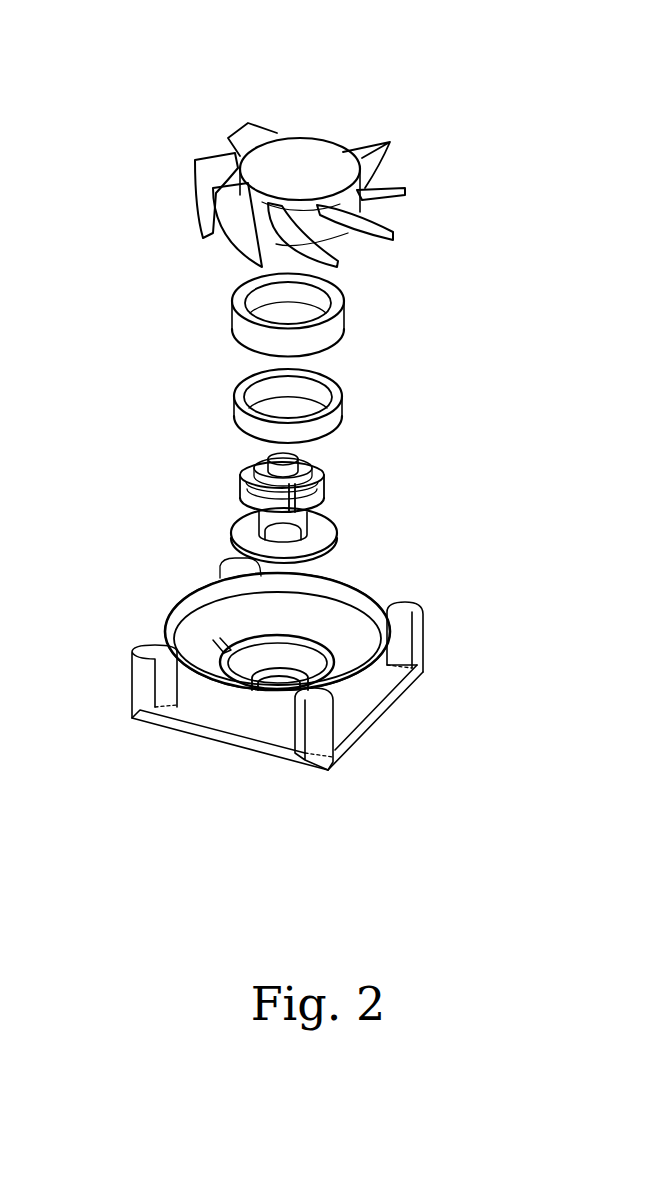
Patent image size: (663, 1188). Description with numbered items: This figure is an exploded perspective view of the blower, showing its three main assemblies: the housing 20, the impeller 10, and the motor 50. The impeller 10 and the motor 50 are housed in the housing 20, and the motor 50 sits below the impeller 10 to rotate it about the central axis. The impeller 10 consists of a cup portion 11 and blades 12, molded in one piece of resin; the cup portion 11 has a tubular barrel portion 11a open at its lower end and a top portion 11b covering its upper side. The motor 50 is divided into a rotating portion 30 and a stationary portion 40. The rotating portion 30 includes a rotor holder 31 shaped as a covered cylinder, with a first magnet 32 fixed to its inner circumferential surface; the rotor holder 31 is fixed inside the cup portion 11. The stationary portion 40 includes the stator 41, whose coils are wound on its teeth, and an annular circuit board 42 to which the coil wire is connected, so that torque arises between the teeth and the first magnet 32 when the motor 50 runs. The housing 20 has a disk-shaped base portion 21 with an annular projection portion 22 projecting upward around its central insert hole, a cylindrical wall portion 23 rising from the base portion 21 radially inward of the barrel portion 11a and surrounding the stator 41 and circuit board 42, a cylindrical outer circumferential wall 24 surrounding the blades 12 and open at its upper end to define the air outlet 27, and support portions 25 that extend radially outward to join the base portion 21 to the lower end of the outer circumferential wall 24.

The impeller 10 is at (218, 62).
The cup portion 11 is at (292, 160).
The barrel portion 11a is at (352, 158).
The top portion 11b is at (333, 157).
The blades 12 is at (242, 137).
The housing 20 is at (373, 602).
The base portion 21 is at (223, 680).
The projection portion 22 is at (300, 690).
The wall portion 23 is at (320, 648).
The outer circumferential wall 24 is at (373, 668).
The support portions 25 is at (216, 638).
The air outlet 27 is at (170, 618).
The rotating portion 30 is at (335, 320).
The rotor holder 31 is at (242, 323).
The first magnet 32 is at (242, 418).
The stationary portion 40 is at (325, 473).
The stator 41 is at (245, 480).
The circuit board 42 is at (323, 527).
The motor 50 is at (442, 323).